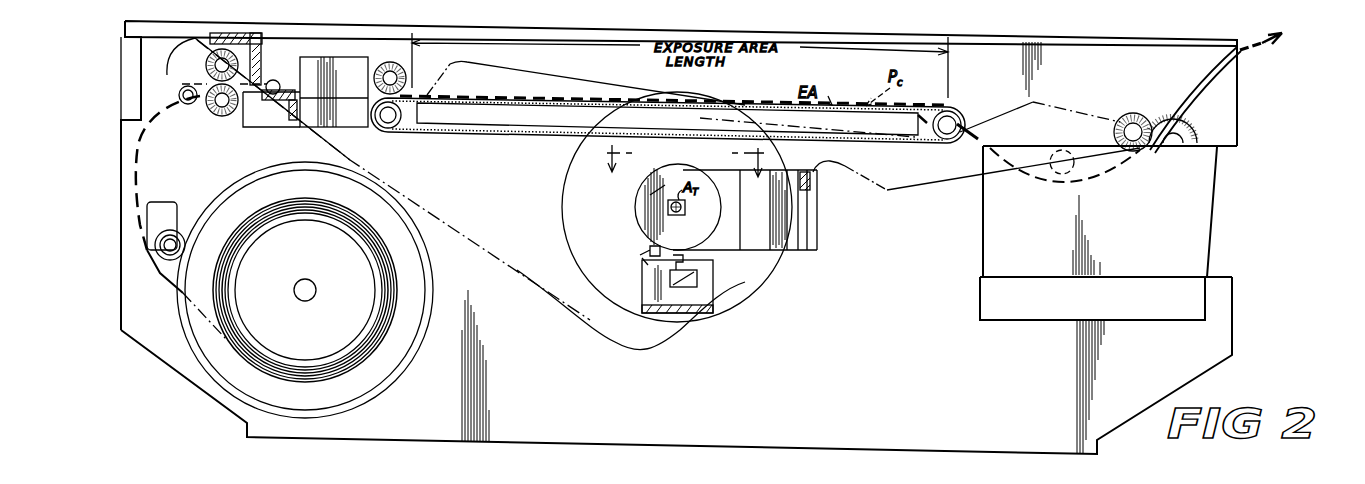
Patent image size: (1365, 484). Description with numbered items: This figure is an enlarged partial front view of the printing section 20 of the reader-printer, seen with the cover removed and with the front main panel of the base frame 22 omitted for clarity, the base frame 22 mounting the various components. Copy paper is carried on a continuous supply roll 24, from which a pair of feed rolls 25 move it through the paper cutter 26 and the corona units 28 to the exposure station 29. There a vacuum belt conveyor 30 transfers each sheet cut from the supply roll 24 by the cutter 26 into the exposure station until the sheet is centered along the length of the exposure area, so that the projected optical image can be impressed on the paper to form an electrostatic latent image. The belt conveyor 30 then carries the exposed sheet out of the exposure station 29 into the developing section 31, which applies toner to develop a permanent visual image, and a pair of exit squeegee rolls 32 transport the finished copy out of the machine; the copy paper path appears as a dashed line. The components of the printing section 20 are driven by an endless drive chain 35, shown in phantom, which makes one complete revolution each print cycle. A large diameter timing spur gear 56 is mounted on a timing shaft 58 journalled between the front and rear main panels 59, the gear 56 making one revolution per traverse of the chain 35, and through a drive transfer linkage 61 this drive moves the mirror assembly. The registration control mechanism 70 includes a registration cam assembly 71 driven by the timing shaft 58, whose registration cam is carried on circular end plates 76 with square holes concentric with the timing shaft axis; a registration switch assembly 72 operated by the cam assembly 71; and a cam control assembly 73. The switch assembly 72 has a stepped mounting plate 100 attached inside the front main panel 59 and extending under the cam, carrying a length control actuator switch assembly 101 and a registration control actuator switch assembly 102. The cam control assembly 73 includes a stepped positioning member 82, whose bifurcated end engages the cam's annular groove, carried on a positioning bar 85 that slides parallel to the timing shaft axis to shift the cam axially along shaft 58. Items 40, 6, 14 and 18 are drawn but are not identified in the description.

The printing section 20 is at (97, 244).
The base frame 22 is at (164, 374).
The supply roll 24 is at (377, 343).
The feed rolls 25 is at (213, 62).
The paper cutter 26 is at (290, 73).
The corona units 28 is at (367, 51).
The exposure station 29 is at (505, 139).
The vacuum belt conveyor 30 is at (483, 98).
The developing section 31 is at (981, 227).
The exit squeegee rolls 32 is at (1150, 108).
The drive chain 35 is at (548, 292).
The drive roller 40 is at (400, 58).
The timing spur gear 56 is at (757, 289).
The timing shaft 58 is at (679, 220).
The main panels 59 is at (914, 392).
The lens module 6 is at (745, 199).
The drive transfer linkage 61 is at (612, 166).
The registration control mechanism 70 is at (617, 200).
The registration cam assembly 71 is at (626, 214).
The mirror 14 is at (638, 232).
The aperture 18 is at (686, 208).
The registration switch assembly 72 is at (634, 294).
The cam control assembly 73 is at (819, 236).
The end plates 76 is at (688, 172).
The positioning member 82 is at (786, 248).
The positioning bar 85 is at (812, 186).
The stepped mounting plate 100 is at (705, 293).
The length control actuator switch assembly 101 is at (710, 281).
The registration control actuator switch assembly 102 is at (634, 251).